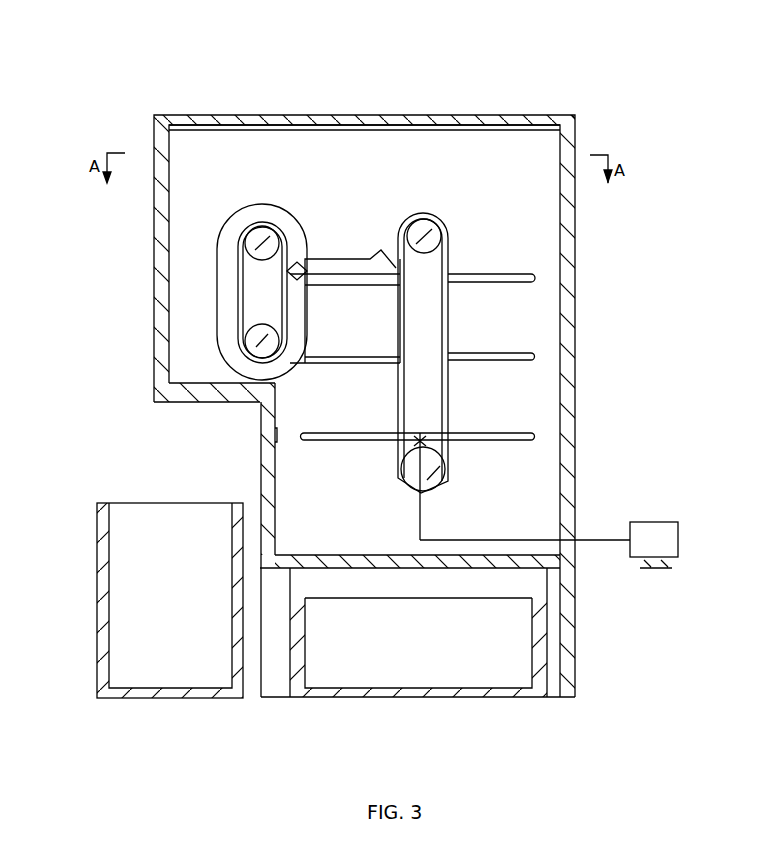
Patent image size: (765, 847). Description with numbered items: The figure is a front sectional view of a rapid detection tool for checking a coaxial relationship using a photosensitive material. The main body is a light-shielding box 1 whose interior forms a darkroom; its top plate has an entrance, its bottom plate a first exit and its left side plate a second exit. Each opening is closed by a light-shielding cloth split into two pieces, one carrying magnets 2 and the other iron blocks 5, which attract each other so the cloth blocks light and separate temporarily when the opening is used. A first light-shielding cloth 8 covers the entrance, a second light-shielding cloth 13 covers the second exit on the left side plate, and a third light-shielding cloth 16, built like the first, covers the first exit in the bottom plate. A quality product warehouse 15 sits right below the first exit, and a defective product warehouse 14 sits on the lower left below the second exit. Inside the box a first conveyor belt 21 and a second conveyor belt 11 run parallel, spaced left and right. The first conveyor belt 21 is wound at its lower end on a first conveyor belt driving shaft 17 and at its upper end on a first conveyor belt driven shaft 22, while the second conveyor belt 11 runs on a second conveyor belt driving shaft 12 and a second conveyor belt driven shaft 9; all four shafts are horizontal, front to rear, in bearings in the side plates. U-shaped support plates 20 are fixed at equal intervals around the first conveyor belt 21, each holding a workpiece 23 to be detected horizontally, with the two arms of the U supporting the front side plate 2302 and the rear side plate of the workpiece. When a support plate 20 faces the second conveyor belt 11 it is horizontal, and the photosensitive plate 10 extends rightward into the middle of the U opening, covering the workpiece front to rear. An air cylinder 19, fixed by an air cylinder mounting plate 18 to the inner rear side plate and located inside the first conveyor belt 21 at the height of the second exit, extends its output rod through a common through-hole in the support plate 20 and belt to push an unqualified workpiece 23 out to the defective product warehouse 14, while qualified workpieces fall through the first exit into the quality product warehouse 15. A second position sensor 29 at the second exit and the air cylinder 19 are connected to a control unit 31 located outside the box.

The light-shielding box 1 is at (155, 117).
The magnets 2 is at (242, 115).
The iron blocks 5 is at (262, 420).
The first light-shielding cloth 8 is at (197, 115).
The second conveyor belt driven shaft 9 is at (258, 246).
The photosensitive plate 10 is at (240, 272).
The second conveyor belt 11 is at (250, 283).
The second conveyor belt driving shaft 12 is at (258, 343).
The second light-shielding cloth 13 is at (258, 417).
The defective product warehouse 14 is at (97, 580).
The quality product warehouse 15 is at (430, 698).
The third light-shielding cloth 16 is at (402, 568).
The first conveyor belt driving shaft 17 is at (449, 470).
The air cylinder mounting plate 18 is at (449, 437).
The air cylinder 19 is at (452, 430).
The support plates 20 is at (452, 349).
The first conveyor belt 21 is at (452, 308).
The first conveyor belt driven shaft 22 is at (427, 232).
The workpiece to be detected 23 is at (343, 268).
The front side plate 2302 is at (305, 260).
The second position sensor 29 is at (283, 395).
The control unit 31 is at (652, 546).